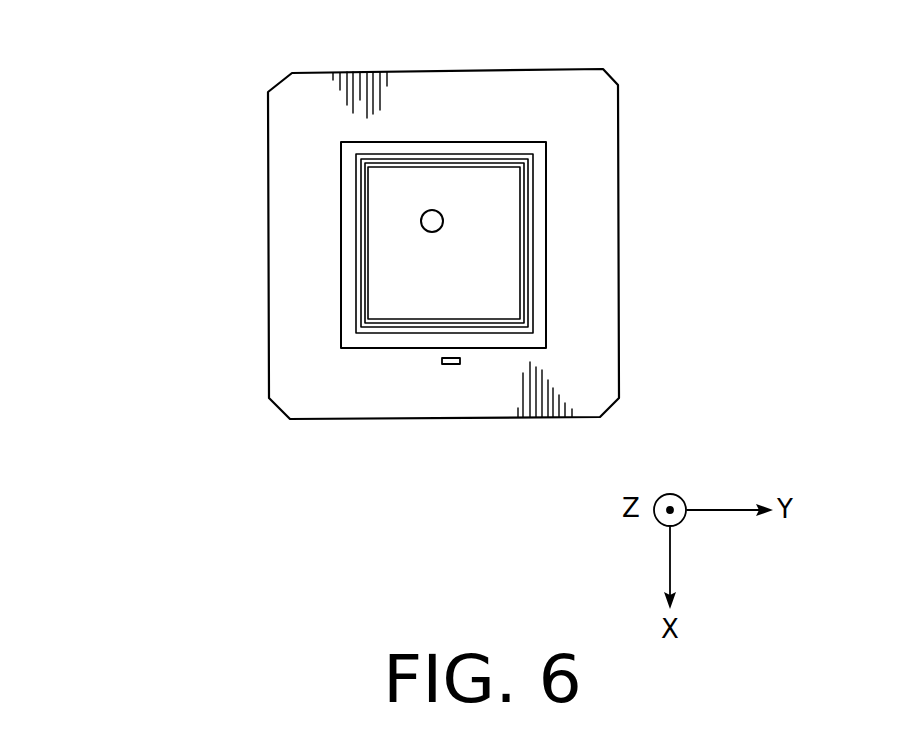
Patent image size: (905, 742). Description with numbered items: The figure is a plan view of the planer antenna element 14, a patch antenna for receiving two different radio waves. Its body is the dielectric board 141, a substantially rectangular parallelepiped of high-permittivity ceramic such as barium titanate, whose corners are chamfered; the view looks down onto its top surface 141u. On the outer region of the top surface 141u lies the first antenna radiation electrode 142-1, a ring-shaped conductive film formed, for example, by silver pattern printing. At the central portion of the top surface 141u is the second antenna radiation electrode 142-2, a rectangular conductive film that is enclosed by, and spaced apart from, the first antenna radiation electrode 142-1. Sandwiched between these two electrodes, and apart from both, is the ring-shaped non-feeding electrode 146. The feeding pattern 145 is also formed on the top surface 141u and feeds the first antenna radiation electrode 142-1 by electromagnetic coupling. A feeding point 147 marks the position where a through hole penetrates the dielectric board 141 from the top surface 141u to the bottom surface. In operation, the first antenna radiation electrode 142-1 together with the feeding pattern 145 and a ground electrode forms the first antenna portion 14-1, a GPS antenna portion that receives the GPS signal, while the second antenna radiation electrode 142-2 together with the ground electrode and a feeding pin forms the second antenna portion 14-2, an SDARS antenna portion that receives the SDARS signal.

The planer antenna element 14 is at (226, 125).
The first antenna portion 14-1 is at (330, 354).
The second antenna portion 14-2 is at (378, 163).
The dielectric board 141 is at (269, 240).
The top surface 141u is at (607, 202).
The first antenna radiation electrode 142-1 is at (546, 157).
The second antenna radiation electrode 142-2 is at (488, 278).
The feeding pattern 145 is at (450, 365).
The non-feeding electrode 146 is at (527, 265).
The feeding point 147 is at (434, 210).